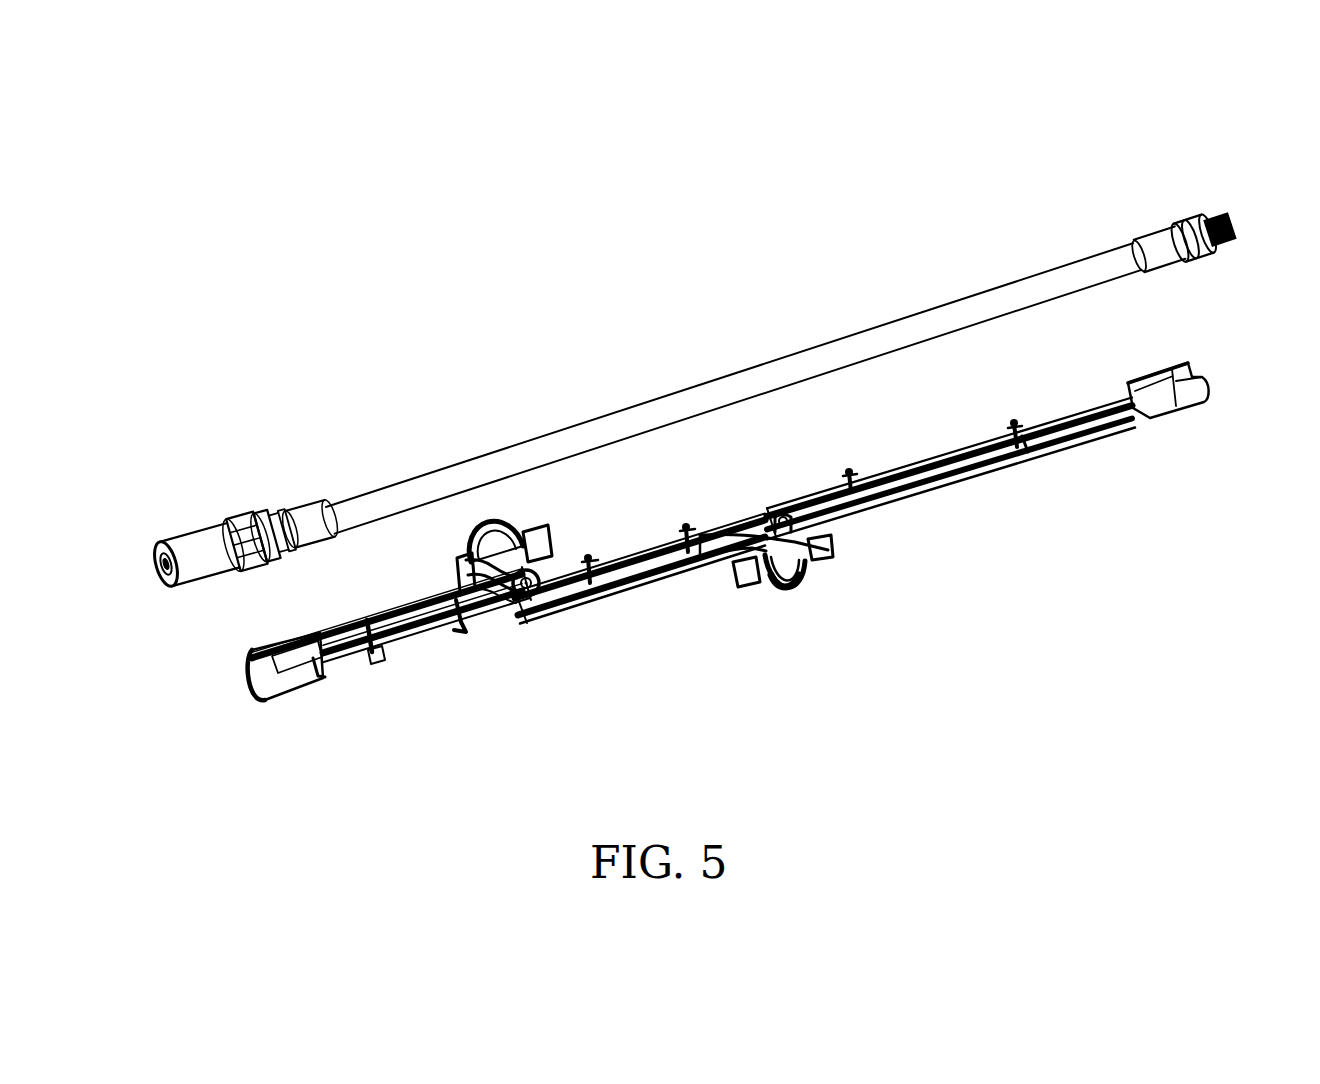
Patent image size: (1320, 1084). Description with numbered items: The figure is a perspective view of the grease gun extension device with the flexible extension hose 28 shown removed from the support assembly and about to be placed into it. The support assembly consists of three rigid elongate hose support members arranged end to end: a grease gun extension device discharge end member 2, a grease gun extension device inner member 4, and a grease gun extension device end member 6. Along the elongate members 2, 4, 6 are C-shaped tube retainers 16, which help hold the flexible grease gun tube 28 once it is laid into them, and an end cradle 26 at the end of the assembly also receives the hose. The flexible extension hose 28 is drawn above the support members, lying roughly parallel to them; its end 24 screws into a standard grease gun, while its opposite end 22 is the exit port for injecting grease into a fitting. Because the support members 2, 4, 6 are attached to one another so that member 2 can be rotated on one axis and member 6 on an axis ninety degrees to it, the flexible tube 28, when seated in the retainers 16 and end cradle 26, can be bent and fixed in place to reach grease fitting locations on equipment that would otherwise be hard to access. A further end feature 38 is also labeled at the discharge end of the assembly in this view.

The grease gun extension device discharge end member 2 is at (522, 643).
The grease gun extension device inner member 4 is at (782, 603).
The grease gun extension device end member 6 is at (1012, 458).
The C-shaped tube retainer 16 is at (850, 470).
The end 22 is at (186, 546).
The end 24 is at (1153, 240).
The end cradle 26 is at (1193, 362).
The flexible extension hose 28 is at (632, 413).
The end boot 38 is at (292, 696).